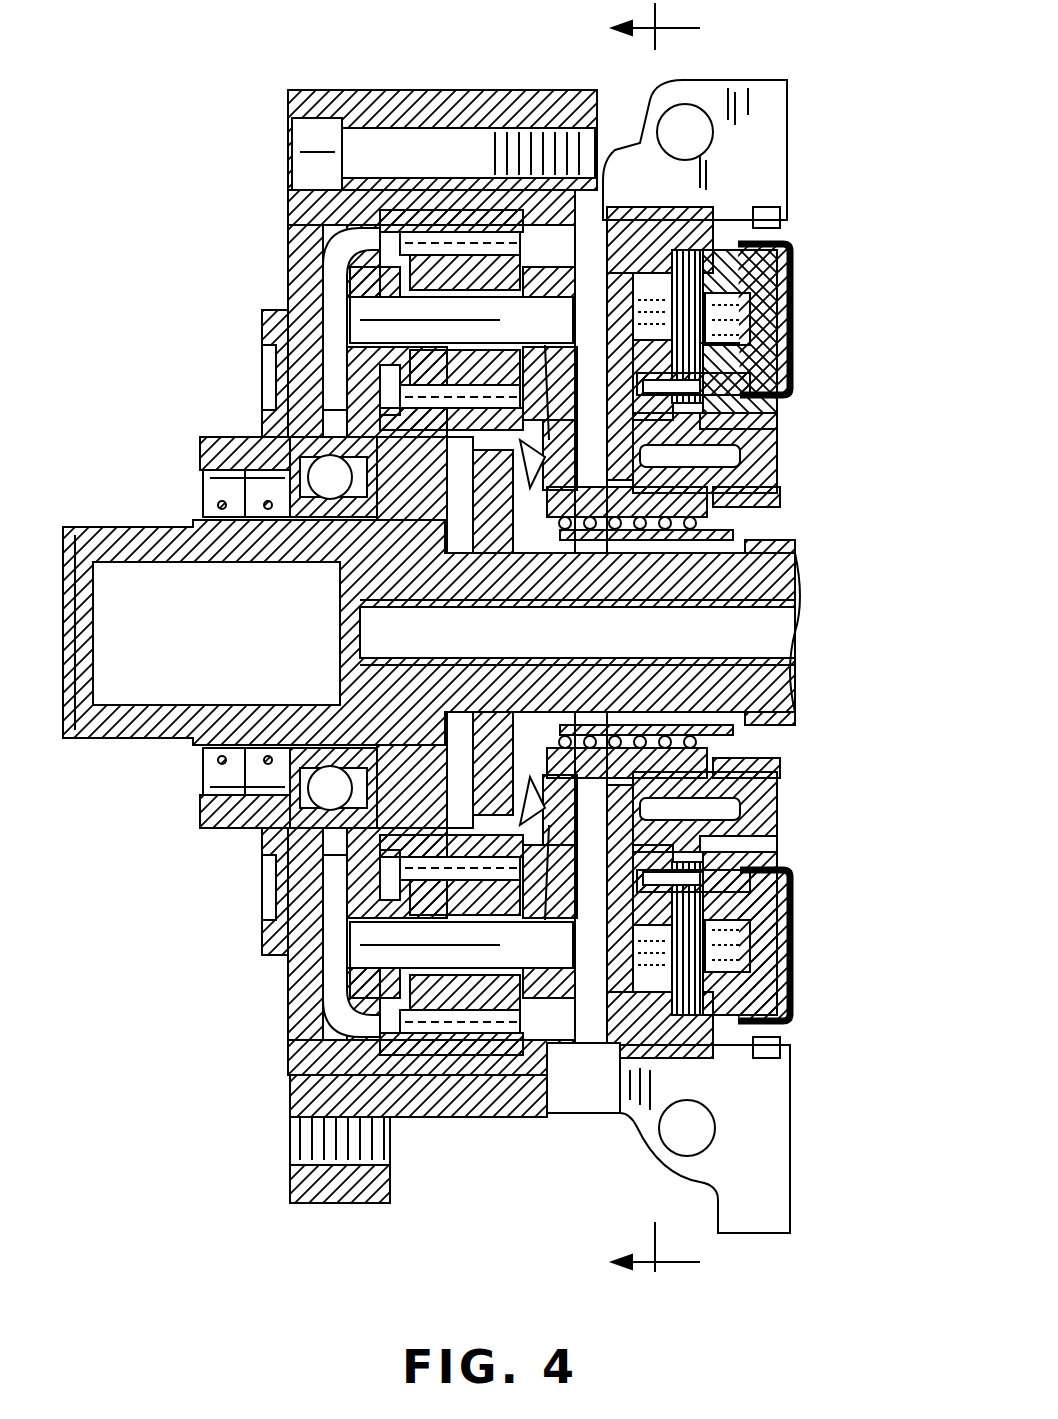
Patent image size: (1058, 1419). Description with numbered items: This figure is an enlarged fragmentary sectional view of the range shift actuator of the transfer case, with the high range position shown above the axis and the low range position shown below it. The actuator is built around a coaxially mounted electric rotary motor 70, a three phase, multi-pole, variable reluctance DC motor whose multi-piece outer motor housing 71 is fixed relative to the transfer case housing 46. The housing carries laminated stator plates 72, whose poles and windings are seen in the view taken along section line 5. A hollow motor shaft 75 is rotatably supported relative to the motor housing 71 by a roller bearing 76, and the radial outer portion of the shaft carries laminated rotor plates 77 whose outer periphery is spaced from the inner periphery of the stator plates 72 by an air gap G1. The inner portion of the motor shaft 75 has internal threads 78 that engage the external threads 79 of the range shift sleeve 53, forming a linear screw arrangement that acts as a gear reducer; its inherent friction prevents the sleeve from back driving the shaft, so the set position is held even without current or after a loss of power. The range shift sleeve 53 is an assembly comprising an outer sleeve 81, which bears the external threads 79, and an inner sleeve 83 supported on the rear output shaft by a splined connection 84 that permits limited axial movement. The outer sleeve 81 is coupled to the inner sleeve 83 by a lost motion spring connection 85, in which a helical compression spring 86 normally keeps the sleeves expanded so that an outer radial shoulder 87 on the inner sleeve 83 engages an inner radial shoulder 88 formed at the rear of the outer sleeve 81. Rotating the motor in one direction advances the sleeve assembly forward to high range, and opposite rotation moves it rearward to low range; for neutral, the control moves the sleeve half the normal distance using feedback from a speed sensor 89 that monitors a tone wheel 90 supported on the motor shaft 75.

The transfer case housing 46 is at (545, 90).
The section line 5- 5 is at (656, 648).
The outer motor housing 71 is at (698, 240).
The speed sensor 89 is at (768, 208).
The tone wheel 90 is at (795, 248).
The stator plates 72 is at (612, 305).
The electric rotary motor 70 is at (805, 298).
The air gap G1 is at (775, 327).
The rotor plates 77 is at (743, 378).
The roller bearing 76 is at (768, 415).
The motor shaft 75 is at (760, 453).
The internal threads 78 is at (749, 490).
The outer sleeve 81 is at (775, 550).
The inner sleeve 83 is at (498, 555).
The outer radial shoulder 87 is at (548, 550).
The external threads 79 is at (578, 550).
The splined connection 84 is at (615, 550).
The lost motion spring connection 85 is at (660, 545).
The helical compression spring 86 is at (688, 545).
The inner radial shoulder 88 is at (725, 545).
The range shift sleeve 53 is at (560, 322).